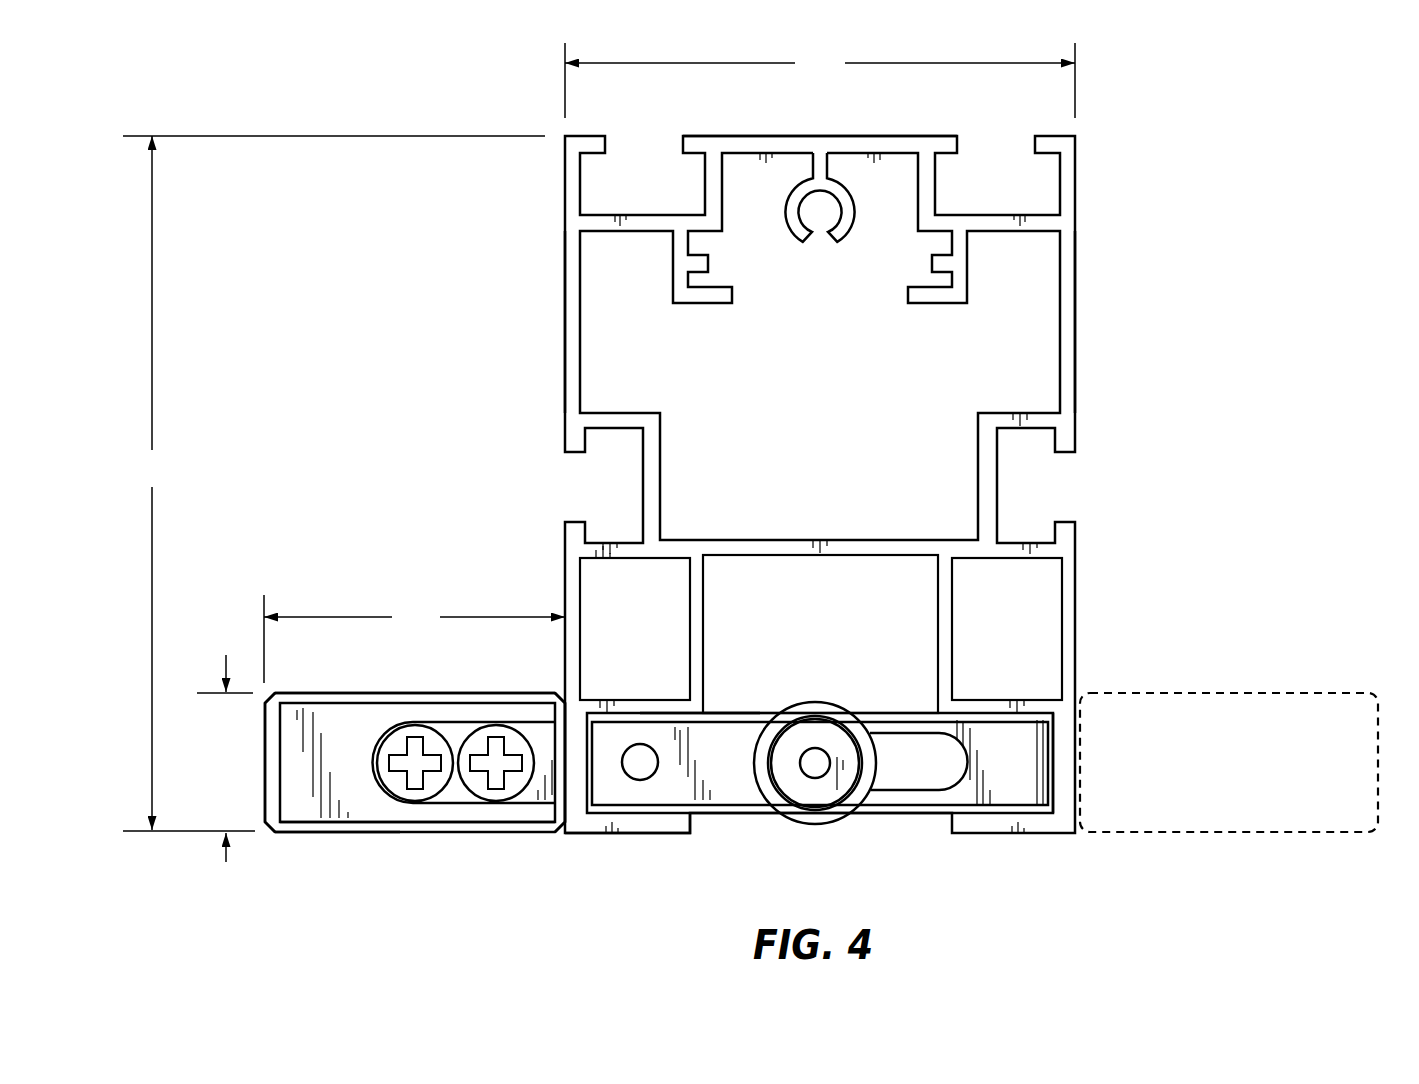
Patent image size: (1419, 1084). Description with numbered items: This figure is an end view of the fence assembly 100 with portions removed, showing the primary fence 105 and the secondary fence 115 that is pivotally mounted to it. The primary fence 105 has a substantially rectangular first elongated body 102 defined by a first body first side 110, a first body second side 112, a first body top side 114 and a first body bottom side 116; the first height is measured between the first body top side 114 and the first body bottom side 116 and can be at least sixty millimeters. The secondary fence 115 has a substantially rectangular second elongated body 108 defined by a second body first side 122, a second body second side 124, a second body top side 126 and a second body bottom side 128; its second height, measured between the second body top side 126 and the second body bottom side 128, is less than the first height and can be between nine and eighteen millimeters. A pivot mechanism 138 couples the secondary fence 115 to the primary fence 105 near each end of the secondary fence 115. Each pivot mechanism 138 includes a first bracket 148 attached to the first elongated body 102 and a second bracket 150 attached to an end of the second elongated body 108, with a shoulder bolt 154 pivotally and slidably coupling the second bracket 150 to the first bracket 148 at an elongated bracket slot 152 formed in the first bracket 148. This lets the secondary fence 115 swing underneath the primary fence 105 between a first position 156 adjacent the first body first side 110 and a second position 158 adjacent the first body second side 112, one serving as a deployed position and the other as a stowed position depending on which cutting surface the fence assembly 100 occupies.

The fence assembly 100 is at (452, 100).
The first elongated body 102 is at (1078, 193).
The primary fence 105 is at (1102, 270).
The second elongated body 108 is at (357, 793).
The first body first side 110 is at (565, 295).
The first body second side 112 is at (1078, 323).
The first body top side 114 is at (842, 135).
The secondary fence 115 is at (347, 593).
The first body bottom side 116 is at (648, 830).
The second body first side 122 is at (264, 747).
The second body second side 124 is at (571, 817).
The second body top side 126 is at (388, 692).
The second body bottom side 128 is at (436, 828).
The pivot mechanism 138 is at (848, 852).
The first bracket 148 is at (1005, 778).
The second bracket 150 is at (720, 775).
The elongated bracket slot 152 is at (915, 773).
The shoulder bolt 154 is at (805, 785).
The first position 156 is at (318, 842).
The second position 158 is at (1242, 847).